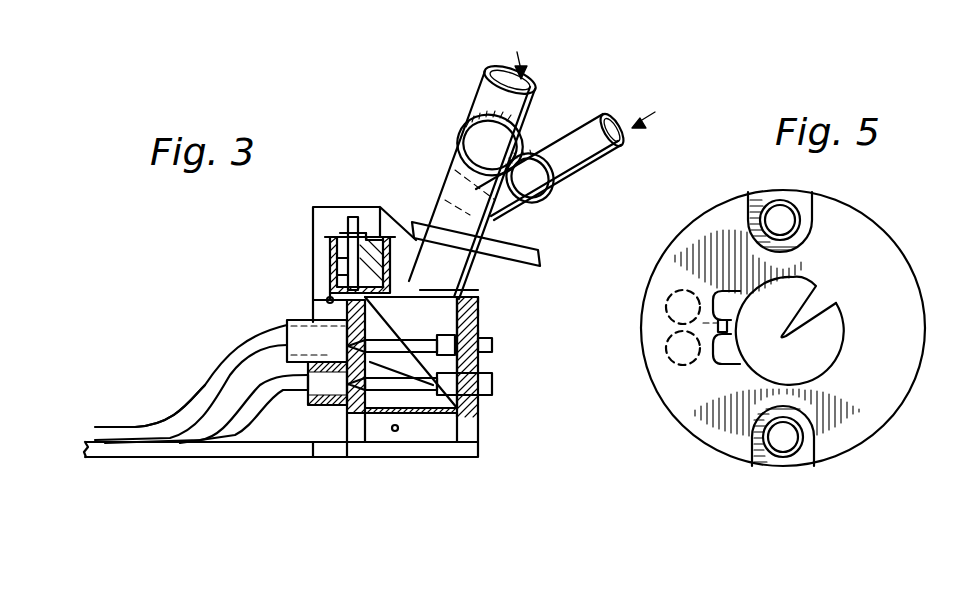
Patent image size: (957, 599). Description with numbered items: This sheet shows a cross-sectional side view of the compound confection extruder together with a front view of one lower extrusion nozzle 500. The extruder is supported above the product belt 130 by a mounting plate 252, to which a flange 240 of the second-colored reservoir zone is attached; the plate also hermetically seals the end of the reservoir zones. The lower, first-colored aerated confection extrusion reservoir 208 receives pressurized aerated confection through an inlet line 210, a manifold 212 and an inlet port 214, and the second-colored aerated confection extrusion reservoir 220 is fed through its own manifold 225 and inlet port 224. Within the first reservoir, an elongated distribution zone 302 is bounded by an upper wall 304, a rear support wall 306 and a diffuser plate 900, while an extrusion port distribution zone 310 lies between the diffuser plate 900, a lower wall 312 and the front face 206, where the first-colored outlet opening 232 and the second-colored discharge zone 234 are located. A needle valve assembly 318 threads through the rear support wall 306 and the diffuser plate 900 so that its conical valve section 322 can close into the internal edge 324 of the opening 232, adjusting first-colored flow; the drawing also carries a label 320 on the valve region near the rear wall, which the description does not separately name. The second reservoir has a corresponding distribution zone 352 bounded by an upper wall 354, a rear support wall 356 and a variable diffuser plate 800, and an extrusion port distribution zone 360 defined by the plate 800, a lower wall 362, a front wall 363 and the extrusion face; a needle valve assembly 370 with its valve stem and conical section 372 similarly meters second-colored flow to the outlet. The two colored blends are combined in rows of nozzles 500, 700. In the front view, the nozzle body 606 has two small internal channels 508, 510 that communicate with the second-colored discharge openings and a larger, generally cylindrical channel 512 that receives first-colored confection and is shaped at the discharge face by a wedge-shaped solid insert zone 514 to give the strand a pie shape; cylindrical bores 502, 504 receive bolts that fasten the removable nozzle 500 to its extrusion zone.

In FIG. 3, the product belt 130 is at (113, 460).
In FIG. 3, the front face 206 is at (356, 312).
In FIG. 3, the first-colored aerated confection extrusion reservoir 208 is at (440, 416).
In FIG. 3, the inlet line 210 is at (532, 96).
In FIG. 3, the manifold 212 is at (478, 147).
In FIG. 3, the inlet port 214 is at (478, 283).
In FIG. 3, the second-colored aerated confection extrusion reservoir 220 is at (333, 253).
In FIG. 3, the inlet port 224 is at (459, 138).
In FIG. 3, the manifold 225 is at (515, 198).
In FIG. 3, the outlet opening 232 is at (317, 341).
In FIG. 3, the discharge zone 234 is at (326, 405).
In FIG. 3, the flange 240 is at (242, 346).
In FIG. 3, the mounting plate 252 is at (481, 430).
In FIG. 3, the pressurized aerated confection distribution zone 302 is at (480, 316).
In FIG. 3, the upper wall 304 is at (480, 299).
In FIG. 3, the rear support wall 306 is at (480, 331).
In FIG. 3, the extrusion port distribution zone 310 is at (385, 415).
In FIG. 3, the lower wall 312 is at (462, 440).
In FIG. 3, the needle valve assembly 318 is at (500, 387).
In FIG. 3, the bracket 320 is at (418, 313).
In FIG. 3, the conical end valve section 322 is at (357, 415).
In FIG. 3, the internal edge 324 is at (393, 362).
In FIG. 3, the pressurized aerated confection distribution zone 352 is at (357, 233).
In FIG. 3, the upper wall 354 is at (377, 237).
In FIG. 3, the rear support wall 356 is at (512, 196).
In FIG. 3, the extrusion port distribution zone 360 is at (340, 247).
In FIG. 3, the lower wall 362 is at (340, 290).
In FIG. 3, the front wall 363 is at (323, 260).
In FIG. 3, the needle valve assembly 370 is at (337, 271).
In FIG. 3, the valve stem conical valve section 372 is at (393, 240).
In FIG. 3, the extrusion nozzle 500 is at (308, 398).
In FIG. 5, the cylindrical bore 502 is at (778, 212).
In FIG. 5, the cylindrical bore 504 is at (782, 445).
In FIG. 5, the internal channel 508 is at (667, 353).
In FIG. 5, the internal channel 510 is at (668, 293).
In FIG. 5, the channel 512 is at (836, 342).
In FIG. 5, the wedge-shaped solid insert zone 514 is at (810, 298).
In FIG. 5, the nozzle body 606 is at (925, 206).
In FIG. 3, the extrusion nozzle 700 is at (283, 324).
In FIG. 3, the variable diffuser plate 800 is at (313, 207).
In FIG. 3, the diffuser plate 900 is at (478, 370).